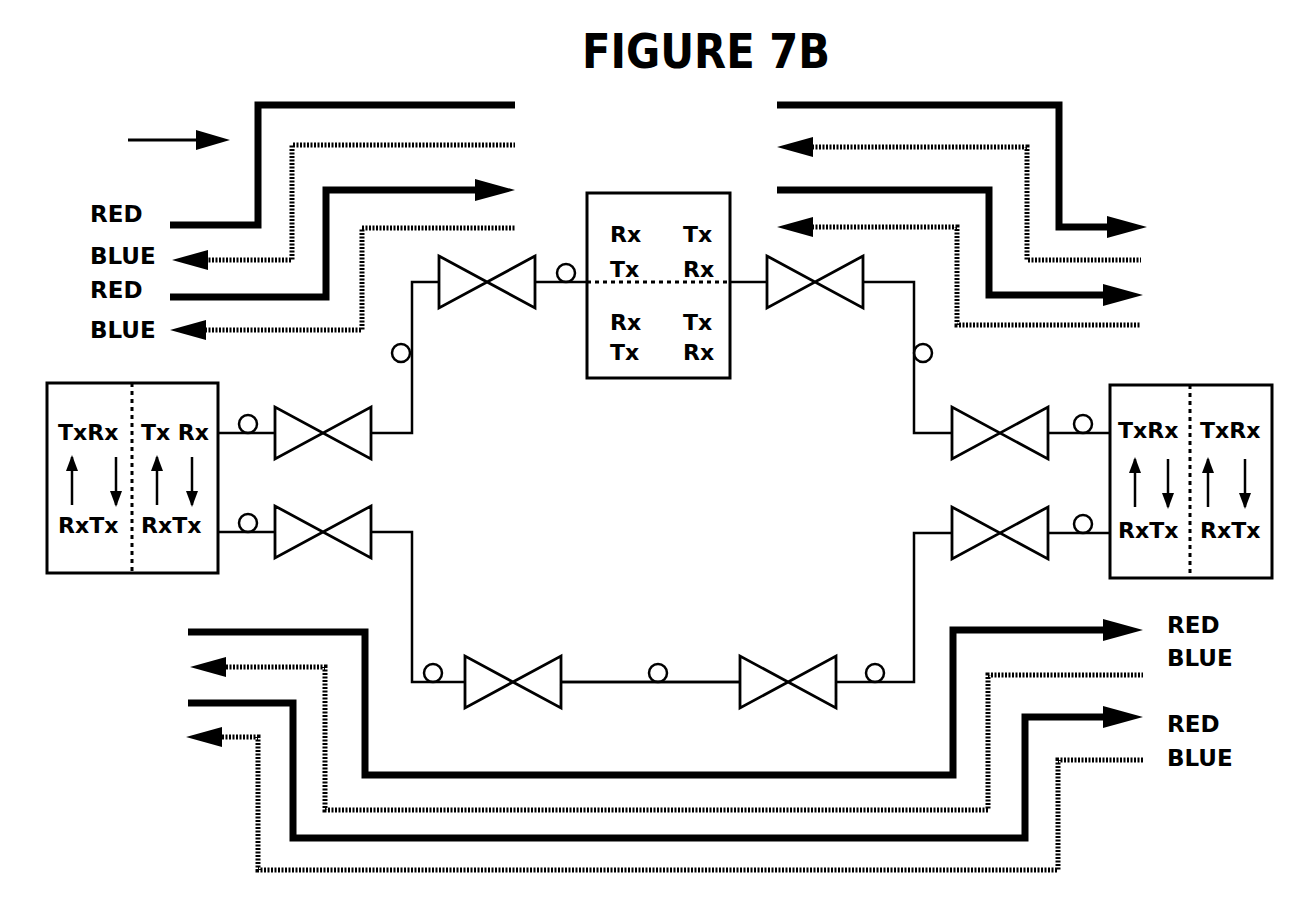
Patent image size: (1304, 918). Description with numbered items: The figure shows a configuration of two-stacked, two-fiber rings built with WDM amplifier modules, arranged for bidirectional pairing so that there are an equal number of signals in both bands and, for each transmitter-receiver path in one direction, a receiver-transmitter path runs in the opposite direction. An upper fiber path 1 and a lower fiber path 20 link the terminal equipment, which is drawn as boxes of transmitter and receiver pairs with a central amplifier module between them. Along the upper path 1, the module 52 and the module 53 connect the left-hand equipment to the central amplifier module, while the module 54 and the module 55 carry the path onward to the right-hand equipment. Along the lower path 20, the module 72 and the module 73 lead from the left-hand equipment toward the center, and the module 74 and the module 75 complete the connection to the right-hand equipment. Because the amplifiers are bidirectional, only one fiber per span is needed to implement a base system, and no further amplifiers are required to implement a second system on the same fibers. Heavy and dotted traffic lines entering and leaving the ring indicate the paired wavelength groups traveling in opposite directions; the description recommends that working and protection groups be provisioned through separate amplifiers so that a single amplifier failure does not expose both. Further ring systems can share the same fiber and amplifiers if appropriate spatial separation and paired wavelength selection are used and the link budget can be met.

The first optical fiber path 1 is at (412, 421).
The second optical fiber path 20 is at (630, 681).
The optical switch 52 is at (345, 420).
The optical switch 53 is at (467, 298).
The optical switch 54 is at (861, 310).
The optical switch 55 is at (972, 420).
The optical switch 72 is at (360, 558).
The optical switch 73 is at (535, 667).
The optical switch 74 is at (775, 672).
The optical switch 75 is at (1013, 550).